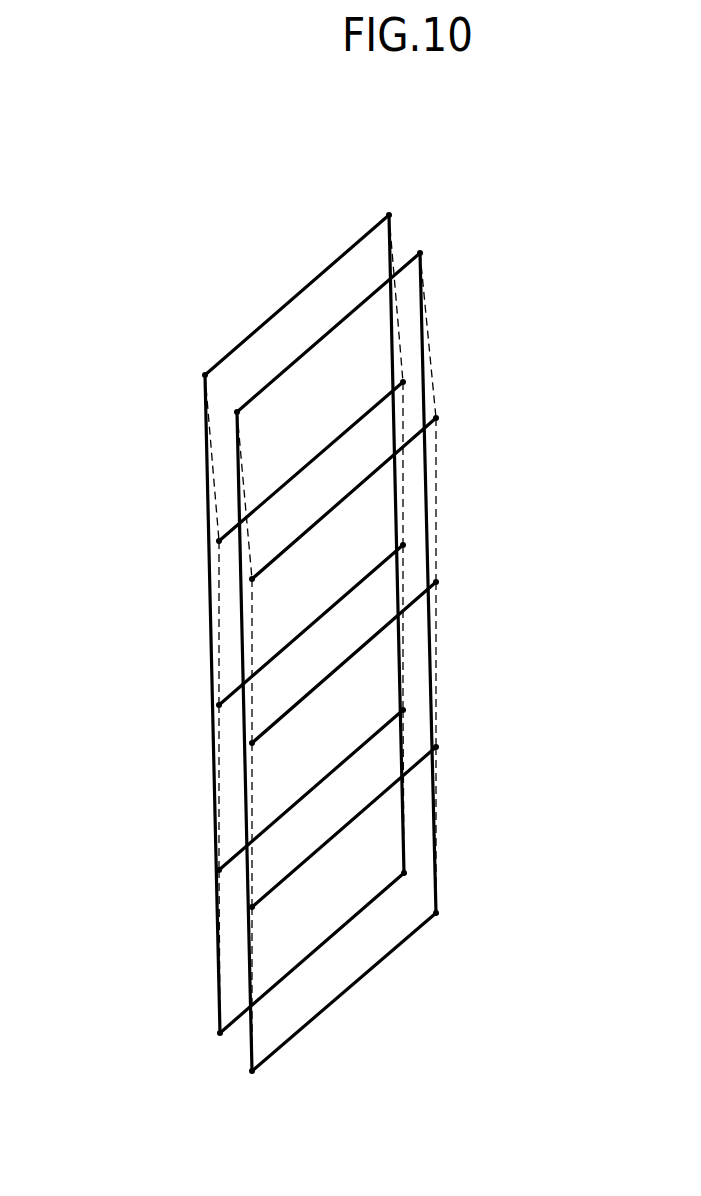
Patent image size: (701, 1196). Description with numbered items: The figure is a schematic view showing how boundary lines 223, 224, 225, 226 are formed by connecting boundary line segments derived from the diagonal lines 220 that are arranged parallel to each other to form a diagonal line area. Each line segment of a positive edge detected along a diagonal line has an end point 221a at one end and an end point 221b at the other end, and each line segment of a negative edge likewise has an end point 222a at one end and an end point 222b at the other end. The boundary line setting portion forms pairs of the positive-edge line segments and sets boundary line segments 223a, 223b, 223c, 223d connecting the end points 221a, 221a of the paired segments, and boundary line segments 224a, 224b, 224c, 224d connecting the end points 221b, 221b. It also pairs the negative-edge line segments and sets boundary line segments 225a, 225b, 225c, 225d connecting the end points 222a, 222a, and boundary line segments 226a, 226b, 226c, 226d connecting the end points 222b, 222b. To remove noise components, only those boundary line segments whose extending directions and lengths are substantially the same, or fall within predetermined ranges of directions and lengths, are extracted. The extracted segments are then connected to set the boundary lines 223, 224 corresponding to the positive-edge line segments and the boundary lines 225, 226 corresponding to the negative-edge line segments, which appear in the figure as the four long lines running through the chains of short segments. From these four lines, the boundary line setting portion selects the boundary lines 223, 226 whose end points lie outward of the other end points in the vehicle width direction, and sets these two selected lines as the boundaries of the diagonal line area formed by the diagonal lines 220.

The diagonal lines 220 is at (398, 248).
The end point 221a is at (205, 375).
The end point 221b is at (389, 215).
The end point 222a is at (237, 412).
The end point 222b is at (421, 253).
The boundary line 223 is at (121, 704).
The boundary line segment 223a is at (213, 467).
The boundary line segment 223b is at (215, 628).
The boundary line segment 223c is at (220, 790).
The boundary line segment 223d is at (217, 893).
The boundary line 224 is at (503, 544).
The boundary line segment 224a is at (430, 290).
The boundary line segment 224b is at (403, 453).
The boundary line segment 224c is at (403, 617).
The boundary line segment 224d is at (403, 723).
The boundary line 225 is at (137, 741).
The boundary line segment 225a is at (215, 560).
The boundary line segment 225b is at (250, 652).
The boundary line segment 225c is at (250, 822).
The boundary line segment 225d is at (248, 920).
The boundary line 226 is at (518, 583).
The boundary line segment 226a is at (431, 337).
The boundary line segment 226b is at (437, 493).
The boundary line segment 226c is at (437, 660).
The boundary line segment 226d is at (437, 773).